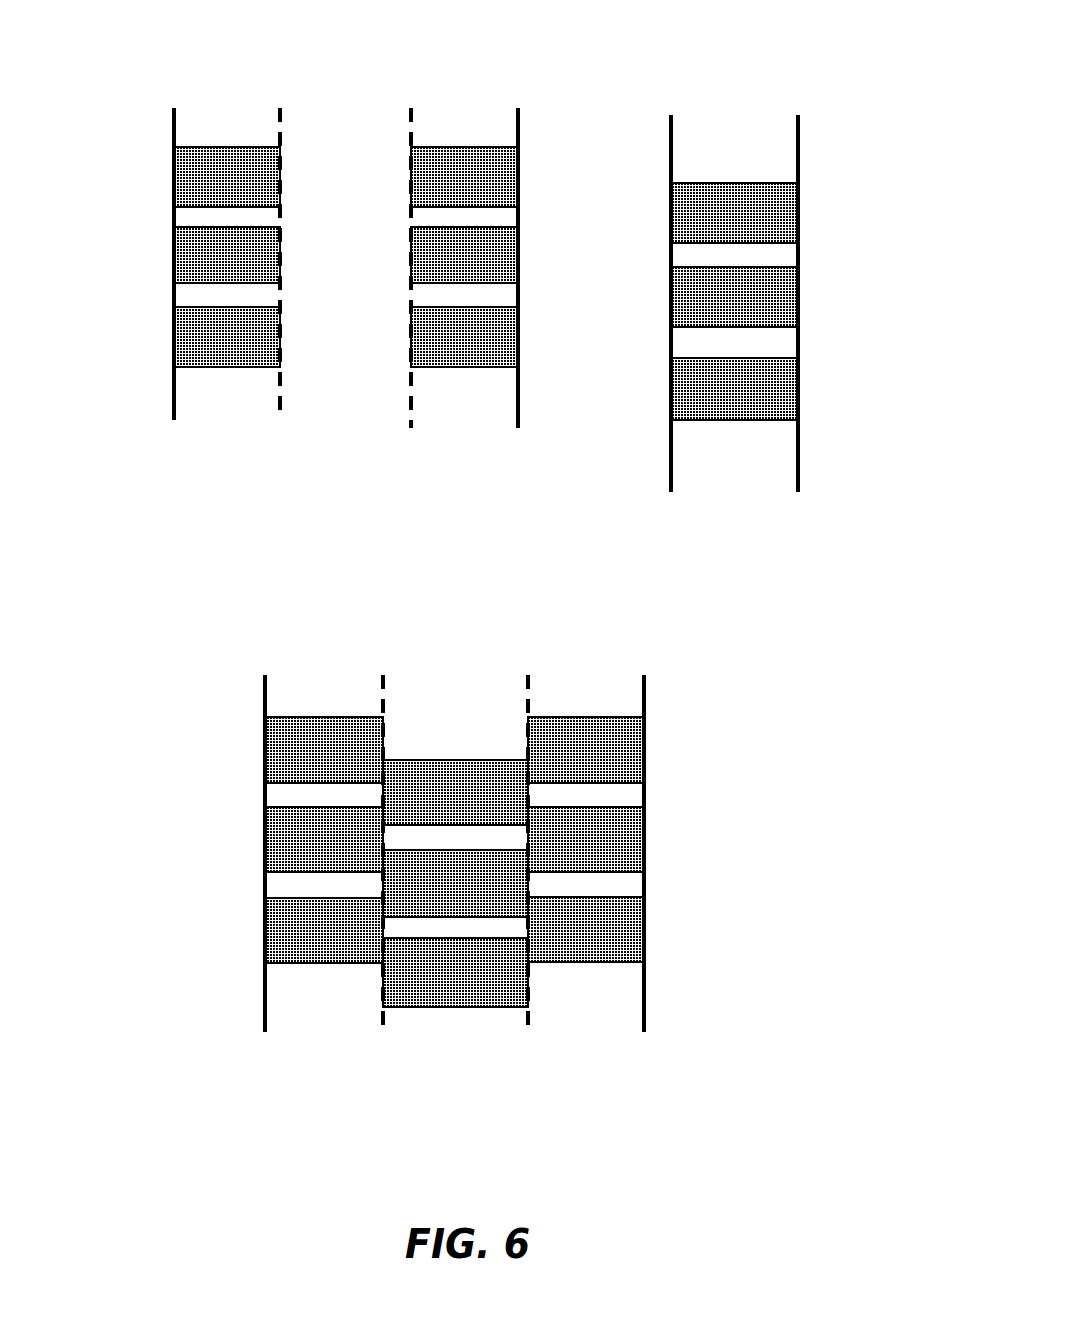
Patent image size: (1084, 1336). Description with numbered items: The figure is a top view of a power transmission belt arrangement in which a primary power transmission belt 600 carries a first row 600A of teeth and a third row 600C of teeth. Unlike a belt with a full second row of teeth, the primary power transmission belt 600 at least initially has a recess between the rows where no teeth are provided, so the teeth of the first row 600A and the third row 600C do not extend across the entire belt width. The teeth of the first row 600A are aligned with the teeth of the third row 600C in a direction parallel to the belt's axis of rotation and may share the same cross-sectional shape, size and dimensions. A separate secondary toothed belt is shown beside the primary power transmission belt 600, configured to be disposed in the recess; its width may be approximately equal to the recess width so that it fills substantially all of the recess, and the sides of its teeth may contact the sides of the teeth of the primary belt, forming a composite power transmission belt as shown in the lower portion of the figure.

The primary power transmission belt 600 is at (343, 218).
The first row 600A is at (161, 214).
The third row 600C is at (527, 218).